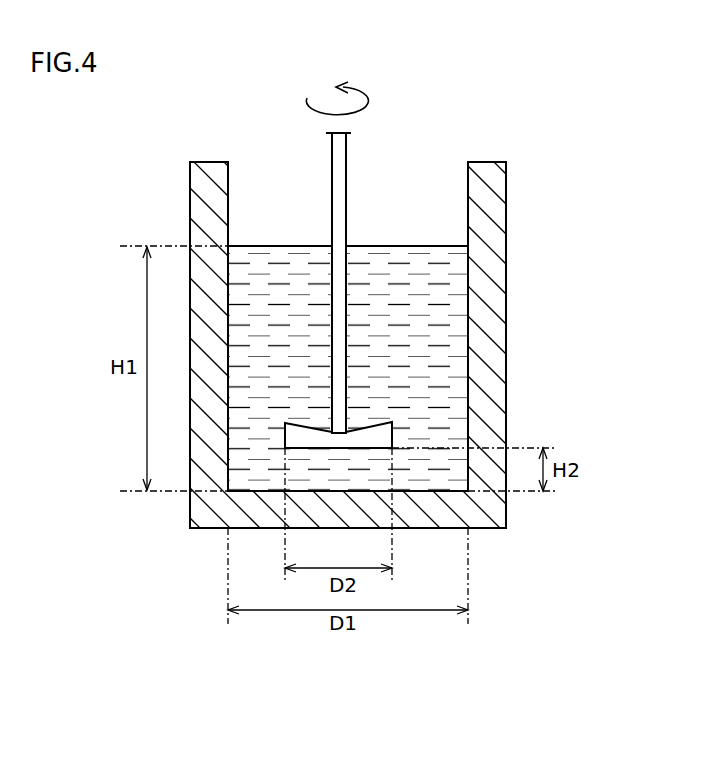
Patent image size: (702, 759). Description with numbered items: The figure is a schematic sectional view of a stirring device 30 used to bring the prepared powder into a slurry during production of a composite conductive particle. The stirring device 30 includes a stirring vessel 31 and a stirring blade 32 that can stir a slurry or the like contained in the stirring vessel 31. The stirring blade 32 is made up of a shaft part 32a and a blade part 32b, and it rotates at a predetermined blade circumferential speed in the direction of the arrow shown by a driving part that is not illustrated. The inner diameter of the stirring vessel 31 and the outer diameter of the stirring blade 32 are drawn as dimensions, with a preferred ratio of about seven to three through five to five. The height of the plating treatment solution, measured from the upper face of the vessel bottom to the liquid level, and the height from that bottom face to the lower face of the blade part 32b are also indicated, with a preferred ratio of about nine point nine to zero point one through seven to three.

The stirring device 30 is at (351, 311).
The stirring vessel 31 is at (492, 310).
The stirring blade 32 is at (425, 265).
The shaft part 32a is at (346, 170).
The blade part 32b is at (392, 432).